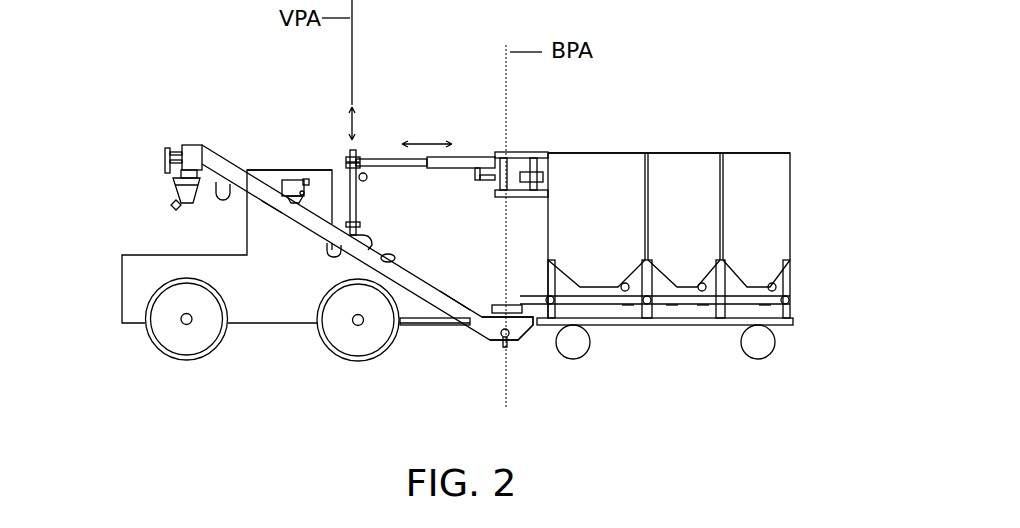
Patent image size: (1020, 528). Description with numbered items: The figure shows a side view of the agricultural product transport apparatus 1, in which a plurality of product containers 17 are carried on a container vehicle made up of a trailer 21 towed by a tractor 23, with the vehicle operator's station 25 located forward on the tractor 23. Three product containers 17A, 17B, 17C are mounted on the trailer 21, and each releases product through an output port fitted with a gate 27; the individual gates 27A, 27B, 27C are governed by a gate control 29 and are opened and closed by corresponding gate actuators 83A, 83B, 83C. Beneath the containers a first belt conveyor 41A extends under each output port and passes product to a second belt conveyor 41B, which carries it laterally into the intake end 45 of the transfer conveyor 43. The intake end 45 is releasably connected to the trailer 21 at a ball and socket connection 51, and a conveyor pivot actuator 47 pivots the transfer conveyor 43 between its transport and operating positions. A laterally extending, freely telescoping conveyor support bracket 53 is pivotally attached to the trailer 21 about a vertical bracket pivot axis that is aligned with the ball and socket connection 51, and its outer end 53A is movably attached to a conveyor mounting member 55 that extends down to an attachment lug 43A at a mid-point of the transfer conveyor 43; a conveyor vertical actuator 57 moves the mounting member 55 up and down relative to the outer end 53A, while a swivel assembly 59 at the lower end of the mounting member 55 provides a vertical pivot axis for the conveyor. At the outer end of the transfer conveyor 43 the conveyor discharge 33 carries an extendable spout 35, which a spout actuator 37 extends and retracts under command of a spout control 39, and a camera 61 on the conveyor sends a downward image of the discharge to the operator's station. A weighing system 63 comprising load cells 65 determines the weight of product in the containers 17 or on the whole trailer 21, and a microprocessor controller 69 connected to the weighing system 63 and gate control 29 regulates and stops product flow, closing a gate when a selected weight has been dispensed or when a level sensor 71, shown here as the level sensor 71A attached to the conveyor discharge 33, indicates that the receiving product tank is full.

The apparatus 1 is at (710, 68).
The product containers 17 is at (718, 208).
The front product container 17A is at (600, 153).
The product container 17B is at (685, 153).
The product container 17C is at (756, 273).
The trailer 21 is at (793, 321).
The tractor 23 is at (137, 255).
The vehicle operator's station 25 is at (288, 144).
The gate 27 is at (734, 258).
The gate 27A is at (603, 283).
The gate 27B is at (683, 285).
The gate 27C is at (757, 283).
The gate control 29 is at (284, 181).
The conveyor discharge 33 is at (194, 206).
The extendable spout 35 is at (208, 150).
The spout actuator 37 is at (165, 156).
The spout control 39 is at (272, 207).
The first belt conveyor 41A is at (672, 310).
The second belt conveyor 41B is at (458, 301).
The transfer conveyor 43 is at (413, 272).
The attachment lug 43A is at (386, 262).
The intake end 45 is at (520, 338).
The conveyor pivot actuator 47 is at (535, 152).
The ball and socket connection 51 is at (490, 340).
The conveyor support bracket 53 is at (466, 158).
The outer end 53A is at (357, 120).
The conveyor mounting member 55 is at (358, 205).
The conveyor vertical actuator 57 is at (368, 178).
The swivel assembly 59 is at (322, 226).
The camera 61 is at (233, 182).
The weighing system 63 is at (691, 294).
The load cells 65 is at (790, 300).
The microprocessor controller 69 is at (307, 179).
The level sensor 71 is at (106, 188).
The level sensor 71A is at (174, 205).
The gate actuator 83A is at (628, 310).
The gate actuator 83B is at (703, 310).
The gate actuator 83C is at (765, 310).